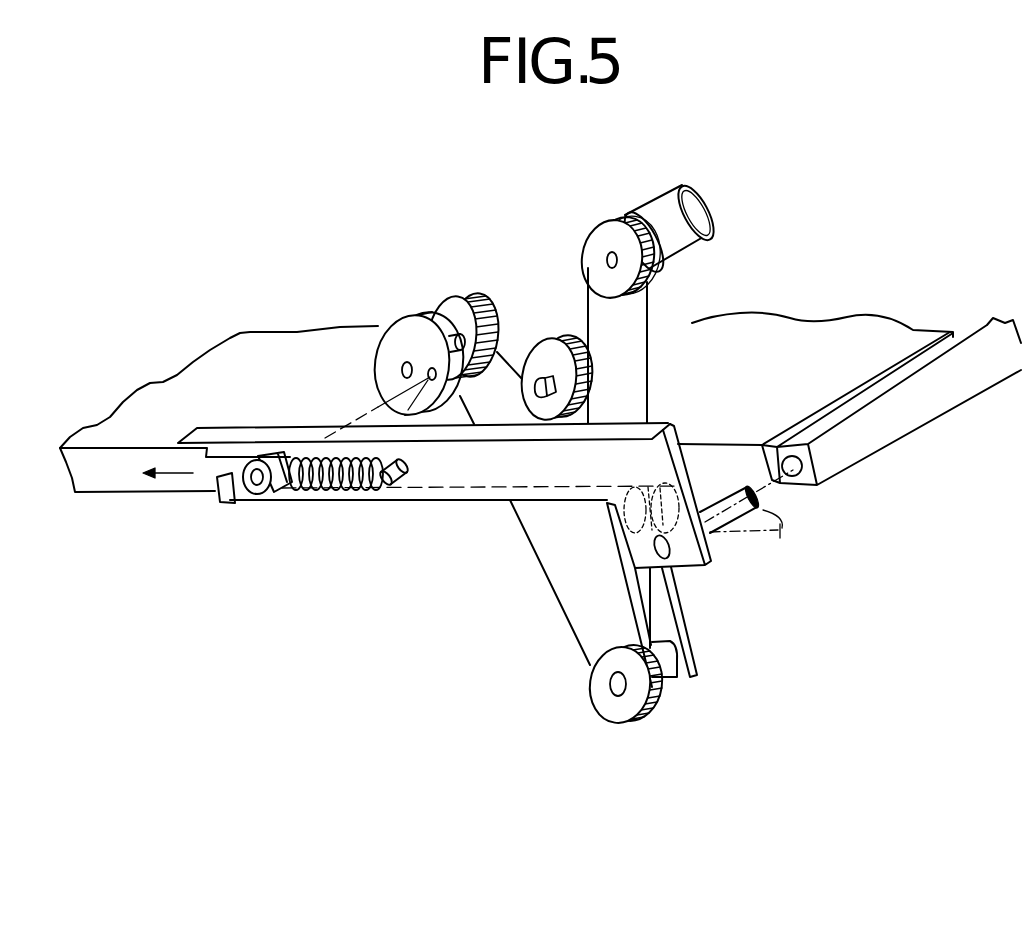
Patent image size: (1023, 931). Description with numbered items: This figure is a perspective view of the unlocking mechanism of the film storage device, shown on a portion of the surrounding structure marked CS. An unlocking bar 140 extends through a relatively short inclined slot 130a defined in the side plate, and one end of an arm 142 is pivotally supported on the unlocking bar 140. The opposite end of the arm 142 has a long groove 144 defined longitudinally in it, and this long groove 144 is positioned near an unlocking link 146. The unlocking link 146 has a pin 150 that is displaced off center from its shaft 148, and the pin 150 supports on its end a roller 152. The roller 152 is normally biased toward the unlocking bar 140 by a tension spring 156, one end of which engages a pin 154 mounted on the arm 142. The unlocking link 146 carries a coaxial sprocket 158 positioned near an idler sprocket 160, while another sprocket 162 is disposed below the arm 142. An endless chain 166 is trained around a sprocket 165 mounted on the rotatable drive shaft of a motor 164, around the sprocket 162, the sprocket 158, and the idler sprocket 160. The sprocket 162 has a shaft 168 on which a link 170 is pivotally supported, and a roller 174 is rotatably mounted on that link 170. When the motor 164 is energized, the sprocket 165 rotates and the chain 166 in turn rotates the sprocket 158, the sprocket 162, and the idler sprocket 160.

The inclined slot 130a is at (782, 540).
The unlocking bar 140 is at (903, 420).
The arm 142 is at (445, 497).
The long groove 144 is at (236, 548).
The unlocking link 146 is at (398, 335).
The shaft 148 is at (403, 366).
The pin 150 is at (392, 400).
The roller 152 is at (263, 492).
The pin 154 is at (385, 484).
The tension spring 156 is at (327, 473).
The sprocket 158 is at (475, 302).
The idler sprocket 160 is at (545, 338).
The sprocket 162 is at (618, 707).
The motor 164 is at (668, 207).
The sprocket 165 is at (590, 220).
The endless chain 166 is at (648, 318).
The shaft 168 is at (617, 682).
The link 170 is at (675, 630).
The roller 174 is at (682, 453).
The chassis CS is at (817, 340).